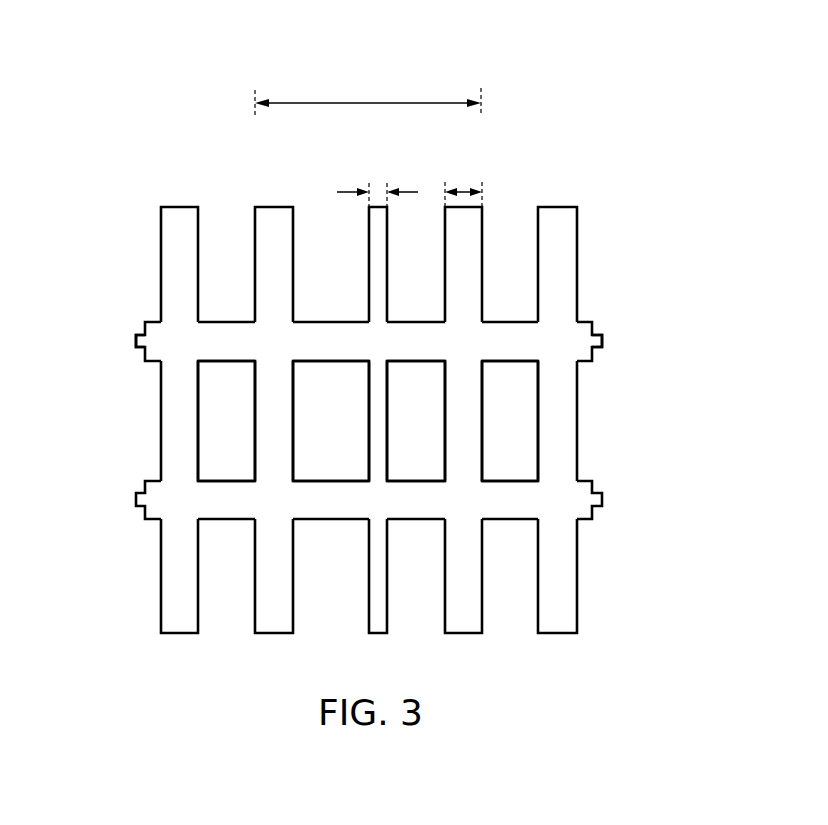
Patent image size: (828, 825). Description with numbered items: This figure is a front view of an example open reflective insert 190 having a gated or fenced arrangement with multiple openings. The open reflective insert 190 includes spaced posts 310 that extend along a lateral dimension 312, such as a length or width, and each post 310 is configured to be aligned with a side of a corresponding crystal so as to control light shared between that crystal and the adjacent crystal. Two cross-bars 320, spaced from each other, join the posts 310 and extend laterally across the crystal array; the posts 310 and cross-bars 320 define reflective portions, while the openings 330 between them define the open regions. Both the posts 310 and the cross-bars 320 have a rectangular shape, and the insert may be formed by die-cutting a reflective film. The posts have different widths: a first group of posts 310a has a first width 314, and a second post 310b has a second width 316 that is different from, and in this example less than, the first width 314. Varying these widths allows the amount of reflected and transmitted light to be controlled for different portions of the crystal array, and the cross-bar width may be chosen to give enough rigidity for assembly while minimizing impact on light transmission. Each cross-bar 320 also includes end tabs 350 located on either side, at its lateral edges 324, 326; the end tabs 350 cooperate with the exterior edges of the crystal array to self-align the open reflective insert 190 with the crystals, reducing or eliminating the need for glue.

The open reflective insert 190 is at (582, 62).
The spaced posts 310 is at (410, 395).
The first group of posts 310a is at (260, 207).
The second post 310b is at (368, 207).
The lateral dimension 312 is at (370, 103).
The first width 314 is at (463, 192).
The second width 316 is at (378, 183).
The cross-bars 320 is at (417, 340).
The lateral edge 324 is at (619, 335).
The lateral edge 326 is at (119, 338).
The openings 330 is at (216, 411).
The end tabs 350 is at (134, 344).